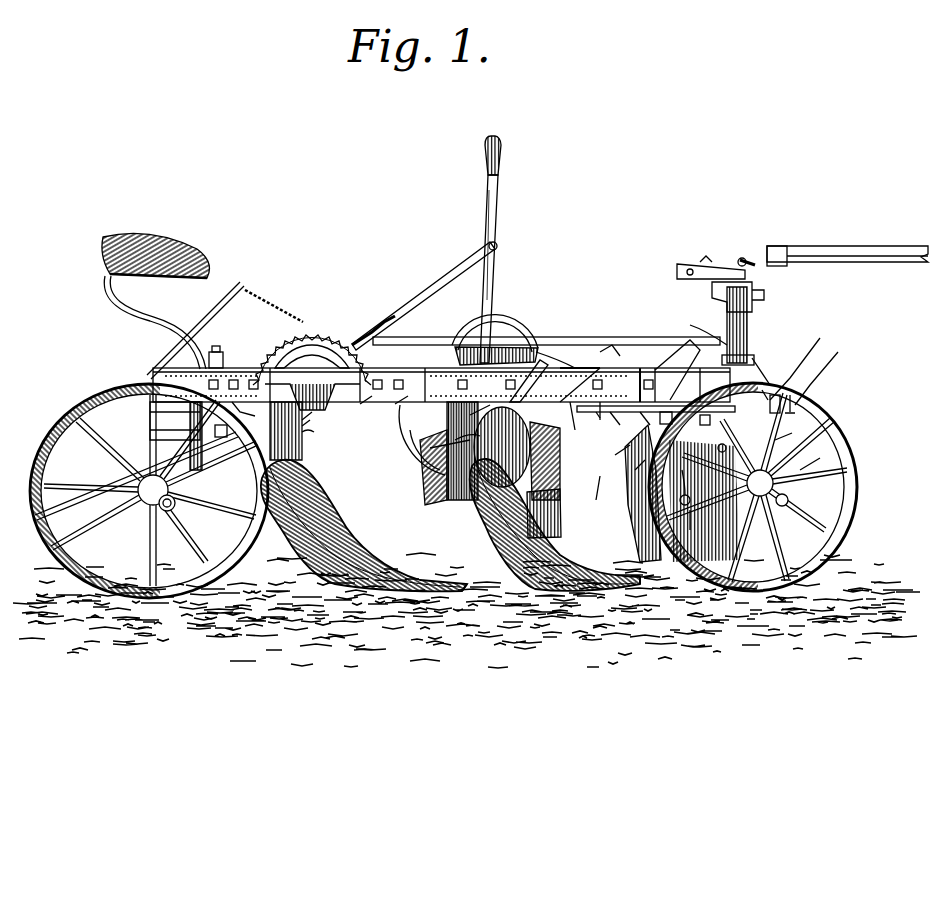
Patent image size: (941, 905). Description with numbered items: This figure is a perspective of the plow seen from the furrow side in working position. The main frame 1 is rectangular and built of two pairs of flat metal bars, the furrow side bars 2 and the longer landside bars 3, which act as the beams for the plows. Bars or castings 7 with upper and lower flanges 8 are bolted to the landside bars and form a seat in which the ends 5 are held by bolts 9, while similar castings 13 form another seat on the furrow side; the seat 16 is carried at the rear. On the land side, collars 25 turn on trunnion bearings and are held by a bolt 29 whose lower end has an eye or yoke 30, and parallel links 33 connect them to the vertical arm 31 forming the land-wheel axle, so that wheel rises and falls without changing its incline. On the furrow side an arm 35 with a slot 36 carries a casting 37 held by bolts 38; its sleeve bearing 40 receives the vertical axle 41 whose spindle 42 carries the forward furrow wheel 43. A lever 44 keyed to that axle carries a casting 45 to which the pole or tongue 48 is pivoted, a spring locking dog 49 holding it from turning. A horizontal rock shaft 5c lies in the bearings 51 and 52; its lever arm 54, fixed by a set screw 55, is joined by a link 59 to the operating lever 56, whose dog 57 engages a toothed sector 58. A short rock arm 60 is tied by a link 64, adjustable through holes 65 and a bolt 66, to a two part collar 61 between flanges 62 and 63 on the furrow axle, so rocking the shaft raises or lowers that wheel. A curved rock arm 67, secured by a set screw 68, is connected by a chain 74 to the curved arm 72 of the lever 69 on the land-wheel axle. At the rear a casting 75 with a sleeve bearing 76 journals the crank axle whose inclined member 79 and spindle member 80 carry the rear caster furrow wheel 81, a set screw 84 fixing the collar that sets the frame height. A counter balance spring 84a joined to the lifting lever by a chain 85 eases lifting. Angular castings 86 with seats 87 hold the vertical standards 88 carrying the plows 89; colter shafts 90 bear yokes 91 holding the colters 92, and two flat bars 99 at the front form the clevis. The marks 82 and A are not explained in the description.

The main frame 1 is at (320, 402).
The furrow side bars 2 is at (640, 370).
The landside bars 3 is at (160, 372).
The ends 5 is at (445, 410).
The horizontal rock shaft 5c is at (631, 463).
The parallel metal bars or castings 7 is at (400, 404).
The upper and lower flanges 8 is at (375, 404).
The bolts 9 is at (360, 405).
The bars or castings 13 is at (580, 368).
The seat 16 is at (156, 301).
The collars 25 is at (611, 335).
The bolt 29 is at (562, 366).
The elongated eye or yoke 30 is at (598, 422).
The land-wheel axle 31 is at (512, 345).
The parallel links 33 is at (525, 360).
The arm 35 is at (648, 425).
The longitudinal slot 36 is at (608, 430).
The casting 37 is at (778, 375).
The bolts 38 is at (666, 424).
The vertical sleeve bearing 40 is at (754, 360).
The vertical shaft or axle 41 is at (747, 322).
The spindle 42 is at (789, 498).
The forward furrow wheel 43 is at (852, 452).
The lever 44 is at (729, 297).
The casting 45 is at (748, 266).
The pole or tongue 48 is at (847, 245).
The spring locking dog 49 is at (685, 264).
The horizontal bearing 51 is at (577, 423).
The horizontal bearing 52 is at (789, 431).
The lever arm 54 is at (677, 370).
The set screw 55 is at (600, 478).
The operating lever 56 is at (446, 282).
The spring controlled dog 57 is at (375, 328).
The toothed sector 58 is at (325, 337).
The link 59 is at (424, 337).
The short rock arm 60 is at (785, 392).
The two part collar or box 61 is at (718, 448).
The flange 62 is at (711, 428).
The flange 63 is at (687, 482).
The link 64 is at (812, 458).
The holes 65 is at (803, 359).
The bolt 66 is at (827, 370).
The rock arm 67 is at (552, 503).
The set screw 68 is at (613, 456).
The lever 69 is at (492, 300).
The short curved arm 72 is at (525, 315).
The chain 74 is at (580, 406).
The casting 75 is at (175, 421).
The vertical sleeve bearing 76 is at (251, 408).
The rearwardly and downwardly inclined member 79 is at (190, 440).
The downwardly inclined member 80 is at (176, 508).
The rear caster furrow wheel 81 is at (228, 430).
The bolt 82 is at (222, 358).
The set screw 84 is at (141, 476).
The counter balance spring 84a is at (240, 285).
The chain 85 is at (272, 305).
The angular castings 86 is at (302, 415).
The seats 87 is at (304, 432).
The vertical standards 88 is at (445, 465).
The plows 89 is at (300, 538).
The colter shafts 90 is at (540, 350).
The yokes 91 is at (587, 469).
The colters 92 is at (450, 582).
The flat horizontal bars 99 is at (797, 412).
The link A is at (601, 423).